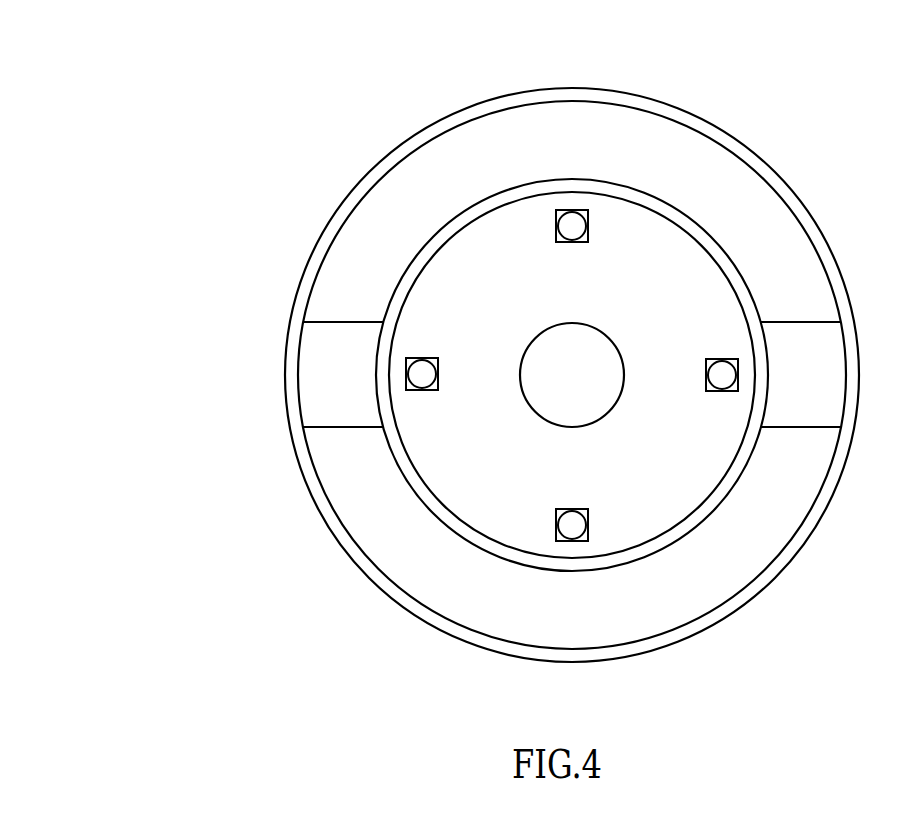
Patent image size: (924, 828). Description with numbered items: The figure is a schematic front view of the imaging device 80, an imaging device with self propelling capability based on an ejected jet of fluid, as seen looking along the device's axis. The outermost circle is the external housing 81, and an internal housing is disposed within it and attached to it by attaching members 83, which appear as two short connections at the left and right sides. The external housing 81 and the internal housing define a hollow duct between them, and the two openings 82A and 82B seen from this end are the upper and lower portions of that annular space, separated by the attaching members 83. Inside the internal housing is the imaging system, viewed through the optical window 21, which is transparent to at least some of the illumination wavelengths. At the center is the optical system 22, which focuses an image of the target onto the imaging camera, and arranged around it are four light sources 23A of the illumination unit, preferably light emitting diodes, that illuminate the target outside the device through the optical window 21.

The imaging device 80 is at (176, 57).
The external housing 81 is at (496, 97).
The opening 82A is at (685, 172).
The opening 82B is at (432, 566).
The attaching members 83 is at (333, 305).
The optical window 21 is at (703, 525).
The optical system 22 is at (540, 333).
The light sources 23A is at (722, 358).